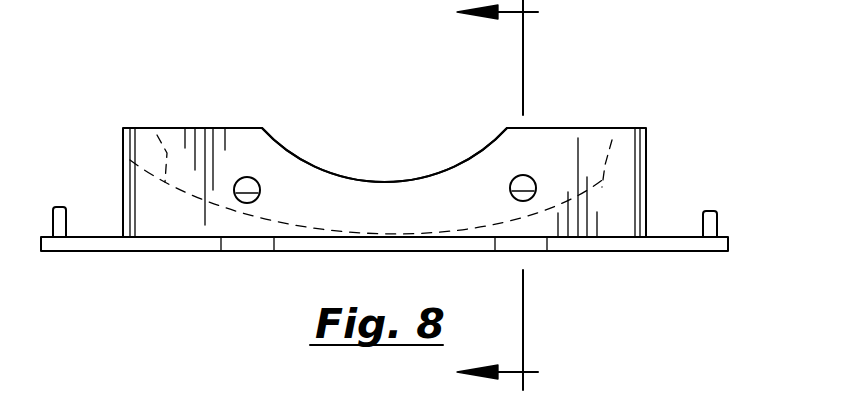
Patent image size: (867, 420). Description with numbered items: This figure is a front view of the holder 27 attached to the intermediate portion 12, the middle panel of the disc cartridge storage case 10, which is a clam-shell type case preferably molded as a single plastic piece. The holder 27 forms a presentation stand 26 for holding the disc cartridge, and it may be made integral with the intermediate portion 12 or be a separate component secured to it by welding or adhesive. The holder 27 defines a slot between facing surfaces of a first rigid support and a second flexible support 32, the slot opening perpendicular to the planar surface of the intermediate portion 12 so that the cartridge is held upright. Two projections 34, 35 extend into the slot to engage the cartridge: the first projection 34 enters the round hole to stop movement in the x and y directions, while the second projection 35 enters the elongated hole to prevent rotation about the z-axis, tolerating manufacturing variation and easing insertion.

The disc cartridge storage case 10 is at (592, 27).
The intermediate portion 12 is at (175, 242).
The presentation stand 26 is at (442, 135).
The holder 27 is at (625, 170).
The second flexible support 32 is at (593, 129).
The first projection 34 is at (247, 180).
The second projection 35 is at (523, 185).